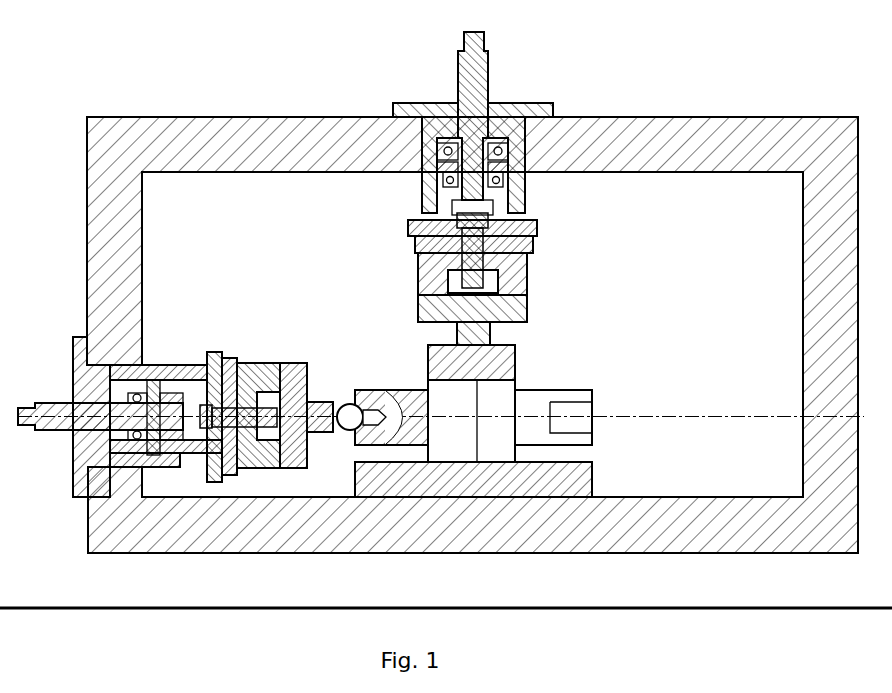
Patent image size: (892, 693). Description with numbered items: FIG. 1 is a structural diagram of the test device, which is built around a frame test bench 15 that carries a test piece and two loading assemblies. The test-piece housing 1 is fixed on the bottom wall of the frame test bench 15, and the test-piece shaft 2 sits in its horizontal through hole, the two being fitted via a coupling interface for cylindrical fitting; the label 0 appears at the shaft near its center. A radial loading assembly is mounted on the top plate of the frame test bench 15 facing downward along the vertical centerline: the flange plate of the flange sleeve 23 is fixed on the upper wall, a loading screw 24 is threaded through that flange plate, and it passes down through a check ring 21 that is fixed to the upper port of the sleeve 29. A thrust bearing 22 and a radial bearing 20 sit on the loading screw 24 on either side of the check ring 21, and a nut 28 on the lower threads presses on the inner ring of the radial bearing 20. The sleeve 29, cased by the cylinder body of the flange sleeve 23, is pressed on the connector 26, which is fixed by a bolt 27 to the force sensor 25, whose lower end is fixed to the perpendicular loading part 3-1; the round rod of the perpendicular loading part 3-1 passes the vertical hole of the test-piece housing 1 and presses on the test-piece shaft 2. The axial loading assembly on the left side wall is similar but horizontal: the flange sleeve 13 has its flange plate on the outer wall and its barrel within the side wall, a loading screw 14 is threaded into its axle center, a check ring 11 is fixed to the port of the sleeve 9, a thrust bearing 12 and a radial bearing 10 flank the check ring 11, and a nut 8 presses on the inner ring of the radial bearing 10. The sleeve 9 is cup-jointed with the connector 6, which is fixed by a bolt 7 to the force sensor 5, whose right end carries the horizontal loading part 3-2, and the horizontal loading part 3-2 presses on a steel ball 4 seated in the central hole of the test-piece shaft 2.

The center point 0 is at (471, 392).
The test-piece housing 1 is at (592, 481).
The test-piece shaft 2 is at (585, 436).
The perpendicular loading part 3-1 is at (527, 320).
The horizontal loading part 3-2 is at (297, 387).
The steel ball 4 is at (343, 405).
The force sensor 5 is at (268, 460).
The connector 6 is at (233, 450).
The bolt 7 is at (217, 453).
The nut 8 is at (190, 440).
The sleeve 9 is at (178, 450).
The radial bearing 10 is at (165, 442).
The check ring 11 is at (153, 455).
The thrust bearing 12 is at (130, 442).
The flange sleeve 13 is at (98, 465).
The loading screw 14 is at (63, 432).
The frame test bench 15 is at (637, 135).
The radial bearing 20 is at (432, 185).
The check ring 21 is at (432, 173).
The thrust bearing 22 is at (445, 165).
The flange sleeve 23 is at (445, 150).
The loading screw 24 is at (465, 97).
The force sensor 25 is at (424, 280).
The connector 26 is at (420, 248).
The bolt 27 is at (415, 230).
The nut 28 is at (440, 216).
The sleeve 29 is at (432, 197).